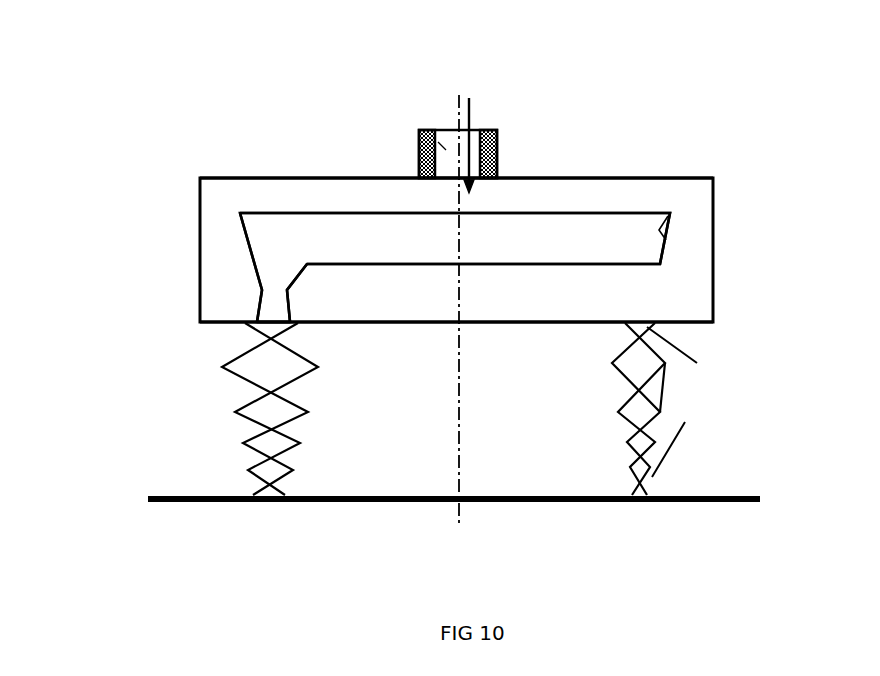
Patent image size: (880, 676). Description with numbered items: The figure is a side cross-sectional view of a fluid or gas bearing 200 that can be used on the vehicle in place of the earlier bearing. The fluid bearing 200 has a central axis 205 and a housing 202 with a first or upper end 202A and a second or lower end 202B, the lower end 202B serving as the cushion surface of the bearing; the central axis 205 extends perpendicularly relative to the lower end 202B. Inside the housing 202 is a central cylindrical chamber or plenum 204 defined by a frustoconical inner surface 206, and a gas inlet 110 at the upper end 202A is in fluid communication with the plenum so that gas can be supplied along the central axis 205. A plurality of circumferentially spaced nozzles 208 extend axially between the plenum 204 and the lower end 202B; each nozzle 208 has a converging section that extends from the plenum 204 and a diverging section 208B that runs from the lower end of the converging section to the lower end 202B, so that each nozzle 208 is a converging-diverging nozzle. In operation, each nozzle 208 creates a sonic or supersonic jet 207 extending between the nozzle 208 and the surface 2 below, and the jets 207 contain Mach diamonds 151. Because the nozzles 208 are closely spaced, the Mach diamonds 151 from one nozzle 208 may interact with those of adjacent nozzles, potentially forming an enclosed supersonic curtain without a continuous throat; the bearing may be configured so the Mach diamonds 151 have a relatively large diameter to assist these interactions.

The fluid bearing 200 is at (166, 130).
The surface 2 is at (730, 497).
The housing 202 is at (672, 186).
The upper end 202A is at (713, 180).
The lower end 202B is at (713, 322).
The plenum 204 is at (585, 238).
The frustoconical inner surface 206 is at (670, 215).
The nozzle 208 is at (264, 280).
The diverging section 208B is at (262, 303).
The gas inlet 110 is at (420, 148).
The central axis 205 is at (457, 106).
The jet 207 is at (608, 397).
The Mach diamonds 151 is at (649, 408).